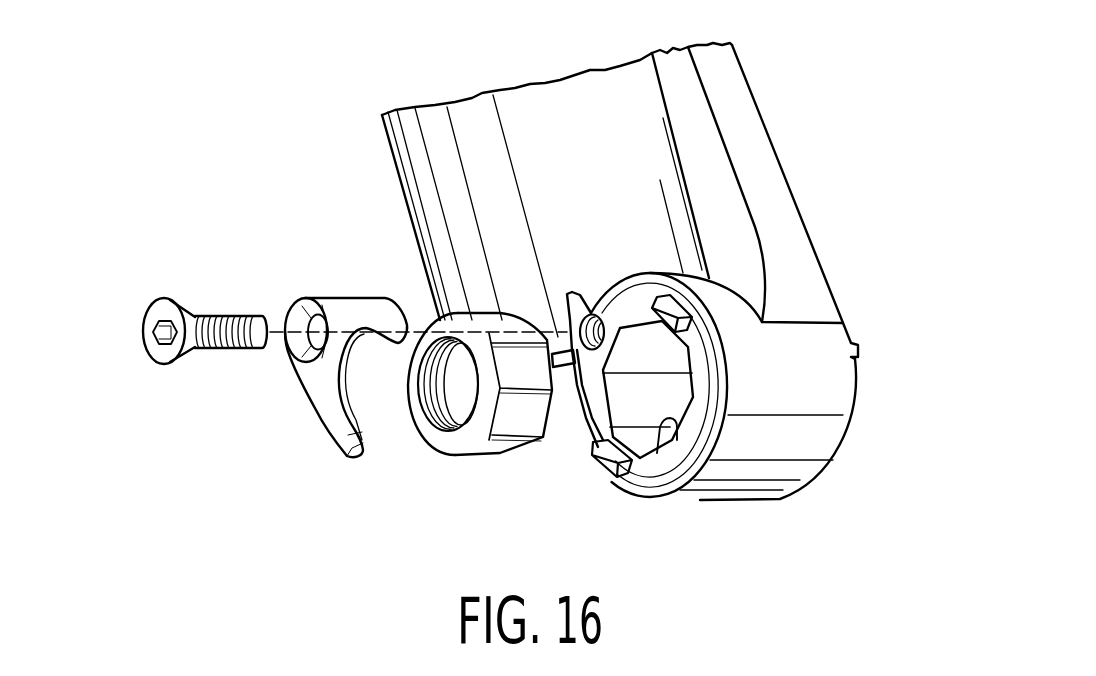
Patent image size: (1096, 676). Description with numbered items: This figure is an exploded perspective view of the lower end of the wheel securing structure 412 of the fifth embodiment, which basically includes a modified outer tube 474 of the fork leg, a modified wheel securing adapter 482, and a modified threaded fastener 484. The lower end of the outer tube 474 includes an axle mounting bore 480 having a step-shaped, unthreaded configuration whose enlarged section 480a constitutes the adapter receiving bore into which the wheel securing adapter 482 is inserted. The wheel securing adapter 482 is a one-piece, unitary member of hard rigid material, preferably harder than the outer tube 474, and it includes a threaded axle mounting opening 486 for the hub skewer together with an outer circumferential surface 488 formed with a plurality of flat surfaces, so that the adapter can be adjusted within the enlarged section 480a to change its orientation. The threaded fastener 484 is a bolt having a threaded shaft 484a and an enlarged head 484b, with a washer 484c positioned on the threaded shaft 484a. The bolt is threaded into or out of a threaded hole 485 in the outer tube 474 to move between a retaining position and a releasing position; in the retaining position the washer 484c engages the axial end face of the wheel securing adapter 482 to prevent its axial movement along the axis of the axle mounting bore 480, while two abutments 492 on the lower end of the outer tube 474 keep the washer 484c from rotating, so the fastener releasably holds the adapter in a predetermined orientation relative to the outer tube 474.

The wheel securing structure 412 is at (314, 180).
The outer tube 474 is at (771, 130).
The axle mounting bore 480 is at (705, 390).
The enlarged section 480a is at (660, 417).
The wheel securing adapter 482 is at (432, 438).
The threaded fastener 484 is at (198, 264).
The threaded shaft 484a is at (223, 311).
The enlarged head 484b is at (172, 294).
The washer 484c is at (312, 403).
The threaded hole 485 is at (592, 314).
The threaded axle mounting opening 486 is at (440, 398).
The outer circumferential surface 488 is at (478, 452).
The abutments 492 is at (603, 461).